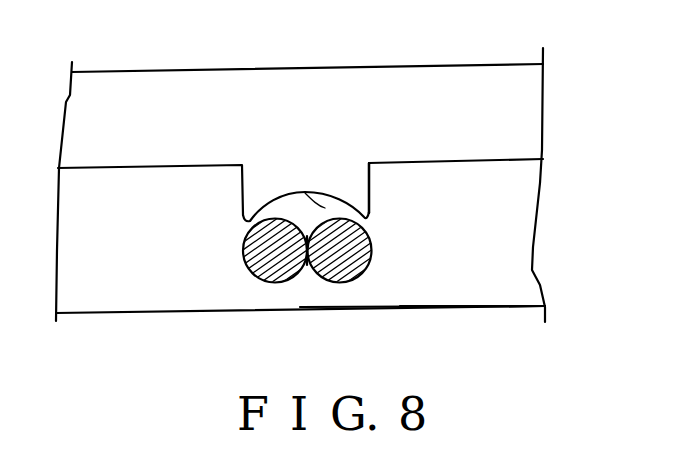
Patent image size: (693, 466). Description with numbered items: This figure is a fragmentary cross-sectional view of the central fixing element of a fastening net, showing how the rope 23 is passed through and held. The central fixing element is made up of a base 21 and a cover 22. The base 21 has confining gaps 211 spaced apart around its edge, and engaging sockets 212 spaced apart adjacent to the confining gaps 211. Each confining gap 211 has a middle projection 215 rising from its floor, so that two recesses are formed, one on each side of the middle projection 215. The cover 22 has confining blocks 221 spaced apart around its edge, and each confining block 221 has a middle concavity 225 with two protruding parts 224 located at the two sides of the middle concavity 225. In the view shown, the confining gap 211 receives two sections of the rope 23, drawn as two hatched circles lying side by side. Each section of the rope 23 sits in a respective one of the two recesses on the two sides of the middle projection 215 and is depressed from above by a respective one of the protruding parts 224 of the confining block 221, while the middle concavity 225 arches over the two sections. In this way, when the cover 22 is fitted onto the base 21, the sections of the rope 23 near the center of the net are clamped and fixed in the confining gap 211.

The base 21 is at (458, 312).
The confining gap 211 is at (375, 225).
The engaging socket 212 is at (463, 262).
The middle projection 215 is at (308, 270).
The cover 22 is at (502, 112).
The confining block 221 is at (325, 168).
The protruding part 224 is at (370, 215).
The middle concavity 225 is at (325, 208).
The rope 23 is at (262, 256).